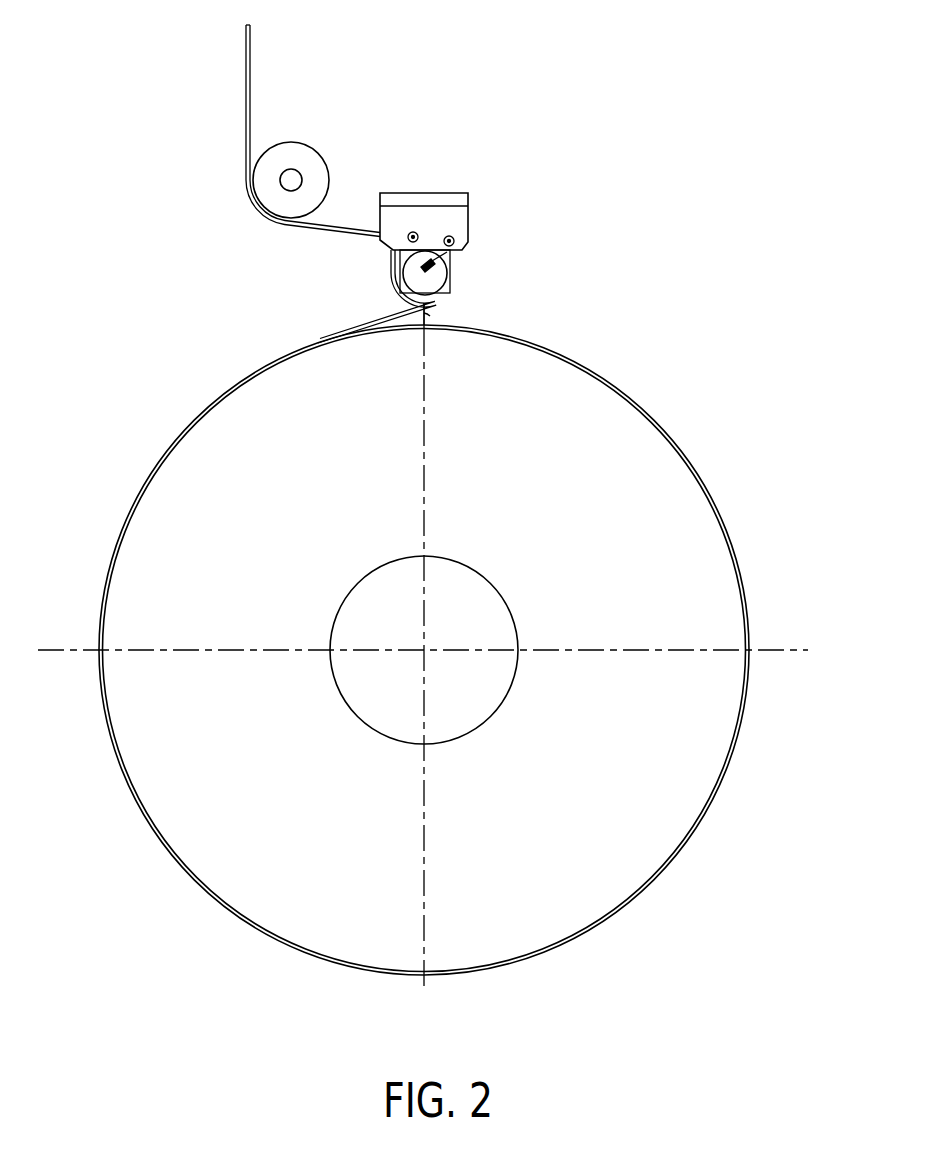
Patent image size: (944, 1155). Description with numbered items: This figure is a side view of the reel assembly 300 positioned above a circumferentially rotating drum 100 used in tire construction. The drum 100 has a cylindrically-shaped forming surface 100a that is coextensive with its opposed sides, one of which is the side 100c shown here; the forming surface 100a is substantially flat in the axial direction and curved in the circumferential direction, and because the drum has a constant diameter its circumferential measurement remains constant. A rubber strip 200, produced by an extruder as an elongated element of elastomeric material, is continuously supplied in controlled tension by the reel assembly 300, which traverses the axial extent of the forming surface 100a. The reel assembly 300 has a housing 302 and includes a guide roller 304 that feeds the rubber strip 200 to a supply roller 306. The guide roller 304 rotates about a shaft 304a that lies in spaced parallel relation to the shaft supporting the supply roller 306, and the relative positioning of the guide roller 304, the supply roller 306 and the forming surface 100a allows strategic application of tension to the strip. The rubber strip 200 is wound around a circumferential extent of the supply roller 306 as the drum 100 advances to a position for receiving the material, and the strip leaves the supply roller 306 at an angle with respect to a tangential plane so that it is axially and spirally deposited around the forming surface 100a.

The drum 100 is at (722, 425).
The forming surface 100a is at (527, 338).
The side 100c is at (718, 572).
The rubber strip 200 is at (250, 63).
The reel assembly 300 is at (505, 108).
The housing 302 is at (468, 217).
The guide roller 304 is at (297, 152).
The shaft 304a is at (302, 180).
The supply roller 306 is at (413, 274).